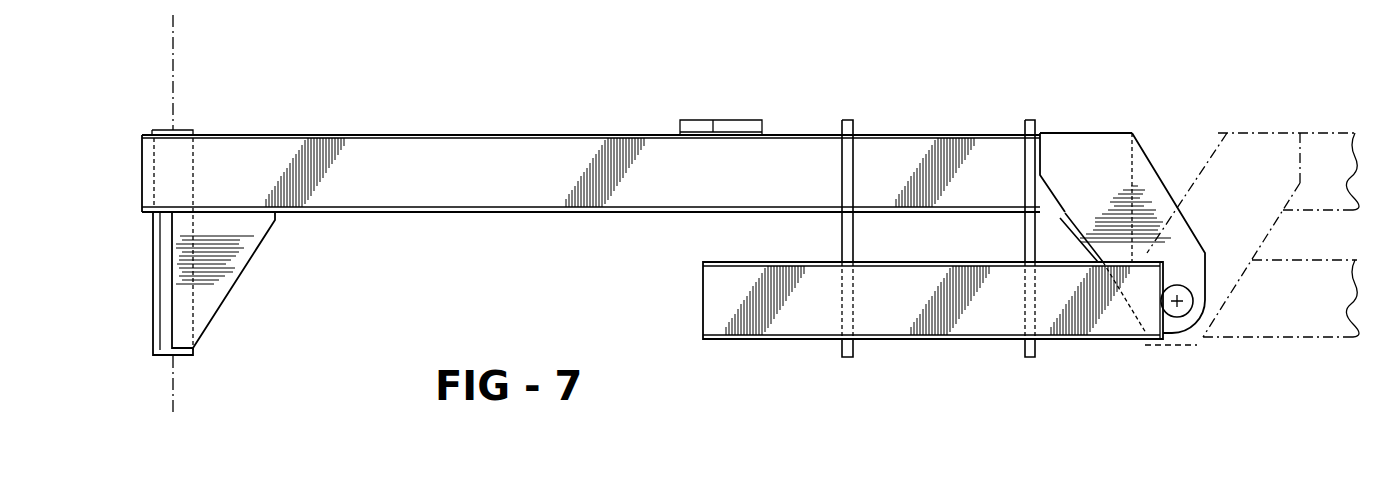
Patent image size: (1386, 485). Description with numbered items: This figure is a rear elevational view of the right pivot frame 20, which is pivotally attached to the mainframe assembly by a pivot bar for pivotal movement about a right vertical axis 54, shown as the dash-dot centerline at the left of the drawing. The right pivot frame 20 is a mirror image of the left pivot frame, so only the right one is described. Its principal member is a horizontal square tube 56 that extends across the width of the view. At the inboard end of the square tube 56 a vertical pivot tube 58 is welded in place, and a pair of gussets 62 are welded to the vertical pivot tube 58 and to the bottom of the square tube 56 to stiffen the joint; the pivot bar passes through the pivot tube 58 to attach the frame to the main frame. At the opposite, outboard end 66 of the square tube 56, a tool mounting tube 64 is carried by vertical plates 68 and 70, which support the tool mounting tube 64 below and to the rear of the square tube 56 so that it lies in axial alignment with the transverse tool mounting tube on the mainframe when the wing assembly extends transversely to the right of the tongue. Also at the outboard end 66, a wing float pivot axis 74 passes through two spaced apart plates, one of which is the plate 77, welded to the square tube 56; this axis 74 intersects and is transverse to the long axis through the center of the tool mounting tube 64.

The right pivot frame 20 is at (511, 229).
The right vertical axis 54 is at (173, 82).
The horizontal square tube 56 is at (410, 135).
The vertical pivot tube 58 is at (165, 298).
The gusset 62 is at (243, 243).
The tool mounting tube 64 is at (892, 328).
The outboard end 66 is at (1097, 133).
The vertical plate 68 is at (843, 218).
The vertical plate 70 is at (1025, 125).
The wing float pivot axis 74 is at (1180, 292).
The plate 77 is at (1183, 243).